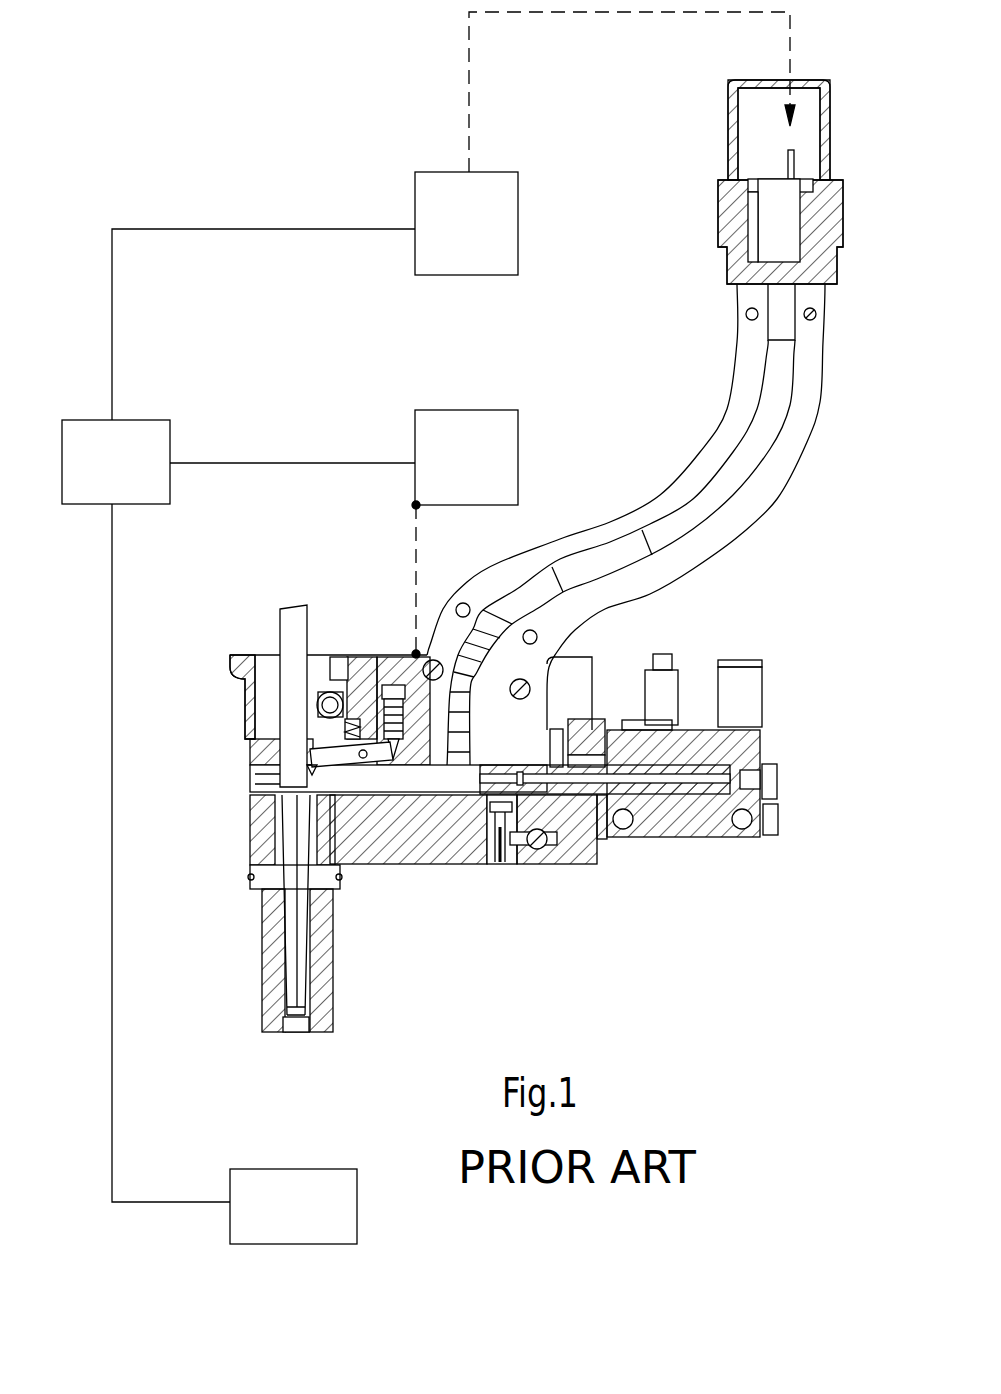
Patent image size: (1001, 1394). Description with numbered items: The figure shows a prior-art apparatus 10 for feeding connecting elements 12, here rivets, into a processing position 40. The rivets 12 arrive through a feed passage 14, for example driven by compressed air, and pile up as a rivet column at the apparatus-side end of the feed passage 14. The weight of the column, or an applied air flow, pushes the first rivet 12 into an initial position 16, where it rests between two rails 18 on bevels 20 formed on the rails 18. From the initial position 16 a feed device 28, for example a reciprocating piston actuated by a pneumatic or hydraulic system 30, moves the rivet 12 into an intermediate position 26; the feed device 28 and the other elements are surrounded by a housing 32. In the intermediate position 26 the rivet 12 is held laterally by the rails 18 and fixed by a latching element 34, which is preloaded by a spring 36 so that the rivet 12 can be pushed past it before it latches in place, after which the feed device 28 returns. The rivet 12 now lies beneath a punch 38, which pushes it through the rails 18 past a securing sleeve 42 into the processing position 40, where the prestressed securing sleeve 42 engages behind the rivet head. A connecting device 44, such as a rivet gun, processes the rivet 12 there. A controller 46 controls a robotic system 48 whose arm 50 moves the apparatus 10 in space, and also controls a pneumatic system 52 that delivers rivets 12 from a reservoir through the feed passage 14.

The apparatus 10 is at (800, 1001).
The connecting element 12 is at (492, 603).
The feed passage 14 is at (768, 428).
The initial position 16 is at (450, 790).
The rails 18 is at (406, 775).
The bevels 20 is at (380, 770).
The intermediate position 26 is at (288, 765).
The feed device 28 is at (527, 863).
The pneumatic or hydraulic system 30 is at (632, 800).
The housing 32 is at (700, 720).
The latching element 34 is at (340, 763).
The spring 36 is at (352, 710).
The punch 38 is at (290, 625).
The processing position 40 is at (296, 1030).
The securing sleeve 42 is at (256, 822).
The connecting device 44 is at (307, 1225).
The controller 46 is at (132, 475).
The robotic system 48 is at (482, 470).
The arm 50 is at (413, 548).
The pneumatic system 52 is at (490, 248).